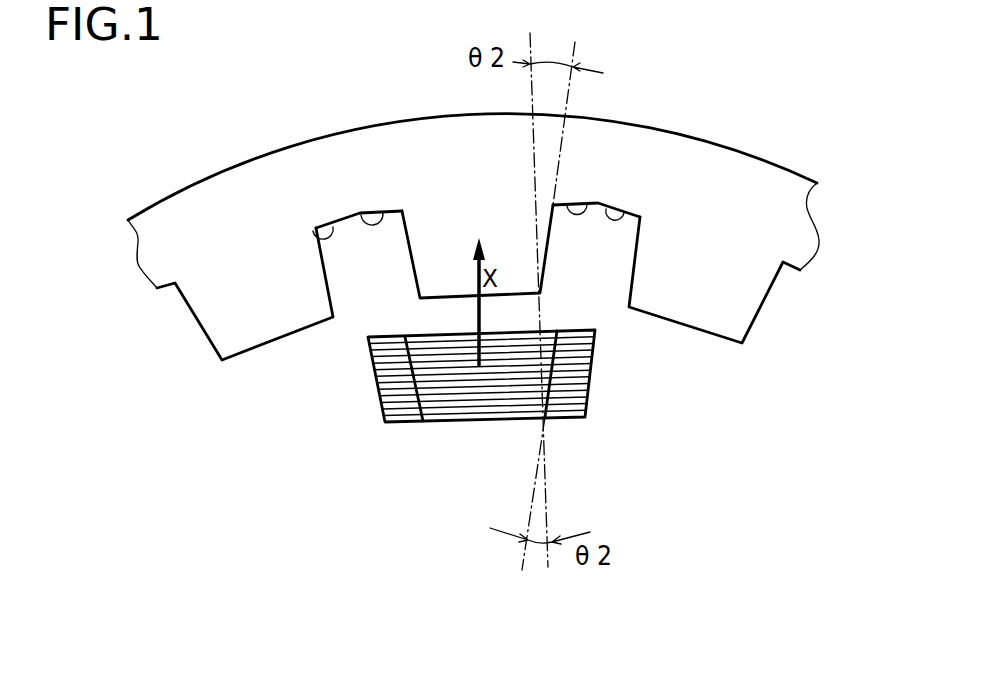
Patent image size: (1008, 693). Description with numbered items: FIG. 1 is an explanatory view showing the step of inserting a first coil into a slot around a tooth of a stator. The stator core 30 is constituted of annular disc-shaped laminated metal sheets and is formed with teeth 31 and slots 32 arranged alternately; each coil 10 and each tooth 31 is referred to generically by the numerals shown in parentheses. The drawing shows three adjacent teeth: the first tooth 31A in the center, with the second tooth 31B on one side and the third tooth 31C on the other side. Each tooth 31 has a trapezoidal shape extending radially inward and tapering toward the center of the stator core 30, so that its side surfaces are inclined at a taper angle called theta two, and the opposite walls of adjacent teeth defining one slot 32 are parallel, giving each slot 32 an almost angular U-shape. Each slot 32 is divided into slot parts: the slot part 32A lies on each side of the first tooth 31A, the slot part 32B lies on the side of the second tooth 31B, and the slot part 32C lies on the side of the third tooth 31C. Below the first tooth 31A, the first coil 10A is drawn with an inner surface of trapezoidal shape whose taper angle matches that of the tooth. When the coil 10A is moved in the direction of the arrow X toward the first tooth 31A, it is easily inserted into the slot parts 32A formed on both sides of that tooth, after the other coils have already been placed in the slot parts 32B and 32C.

The coil 10 is at (435, 407).
The first coil 10A is at (353, 424).
The stator core 30 is at (775, 177).
The tooth 31 is at (478, 246).
The first tooth 31A is at (426, 267).
The second tooth 31B is at (283, 330).
The third tooth 31C is at (695, 317).
The slot 32 is at (355, 87).
The slot part 32A is at (360, 213).
The slot part 32B is at (317, 242).
The slot part 32C is at (633, 215).